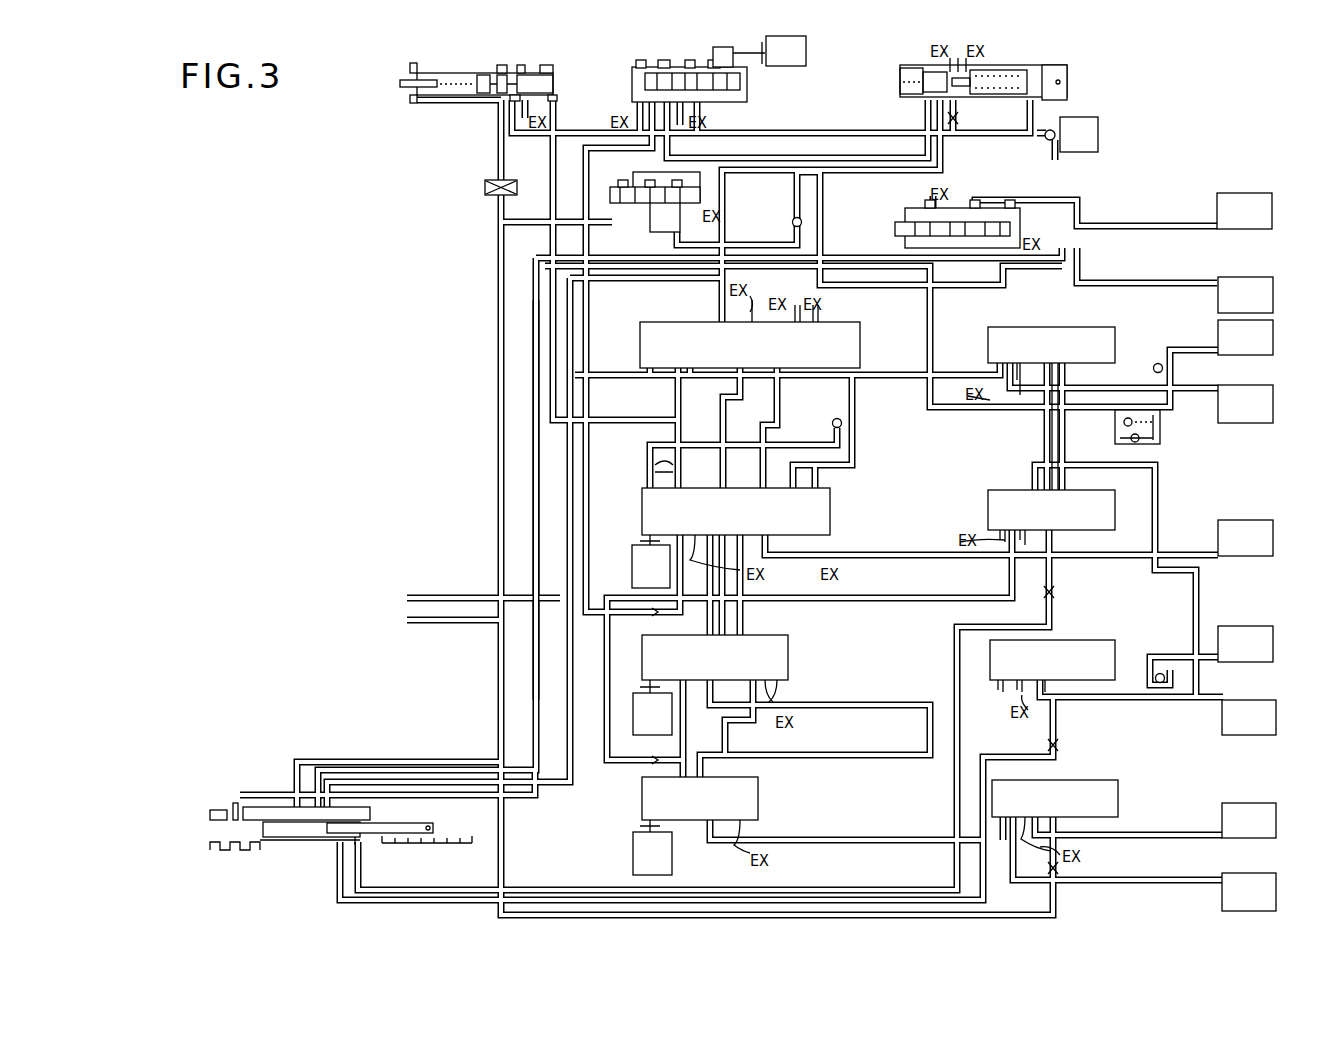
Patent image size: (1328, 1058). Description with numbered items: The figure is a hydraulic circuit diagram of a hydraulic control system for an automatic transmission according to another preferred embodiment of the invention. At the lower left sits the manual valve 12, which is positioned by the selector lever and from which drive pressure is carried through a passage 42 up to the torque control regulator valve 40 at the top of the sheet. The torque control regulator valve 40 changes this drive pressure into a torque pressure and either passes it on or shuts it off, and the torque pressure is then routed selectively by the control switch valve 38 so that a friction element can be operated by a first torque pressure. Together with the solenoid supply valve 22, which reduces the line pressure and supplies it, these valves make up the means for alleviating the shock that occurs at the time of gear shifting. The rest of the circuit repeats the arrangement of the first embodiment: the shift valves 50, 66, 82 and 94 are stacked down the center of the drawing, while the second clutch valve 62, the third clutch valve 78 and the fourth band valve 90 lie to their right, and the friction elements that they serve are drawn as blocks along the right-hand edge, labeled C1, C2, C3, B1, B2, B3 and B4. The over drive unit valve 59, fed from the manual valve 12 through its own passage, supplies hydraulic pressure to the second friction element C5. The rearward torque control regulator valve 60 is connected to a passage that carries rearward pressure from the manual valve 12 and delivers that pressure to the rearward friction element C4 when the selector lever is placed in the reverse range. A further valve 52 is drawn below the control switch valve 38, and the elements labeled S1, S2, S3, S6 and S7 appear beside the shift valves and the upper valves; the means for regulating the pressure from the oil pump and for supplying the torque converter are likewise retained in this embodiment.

The manual valve 12 is at (297, 848).
The solenoid supply valve 22 is at (398, 82).
The control switch valve 38 is at (752, 85).
The torque control regulator valve 40 is at (1075, 82).
The passage 42 is at (533, 388).
The shift valve 50 is at (640, 341).
The control valve 52 is at (619, 218).
The over drive unit valve 59 is at (1124, 780).
The rearward torque control regulator valve 60 is at (900, 224).
The second clutch valve 62 is at (1128, 338).
The shift valve 66 is at (832, 512).
The third clutch valve 78 is at (986, 512).
The shift valve 82 is at (800, 658).
The fourth band valve 90 is at (1124, 640).
The shift valve 94 is at (768, 799).
The solenoid S1 is at (651, 561).
The solenoid S2 is at (652, 707).
The solenoid S3 is at (652, 847).
The solenoid S6 is at (786, 51).
The solenoid S7 is at (1079, 134).
The clutch C1 is at (1276, 718).
The clutch C2 is at (1273, 296).
The clutch C3 is at (1273, 538).
The rearward friction element C4 is at (1272, 212).
The second friction element C5 is at (1276, 820).
The brake B1 is at (1273, 338).
The brake B2 is at (1273, 404).
The brake B3 is at (1273, 644).
The brake B4 is at (1276, 892).